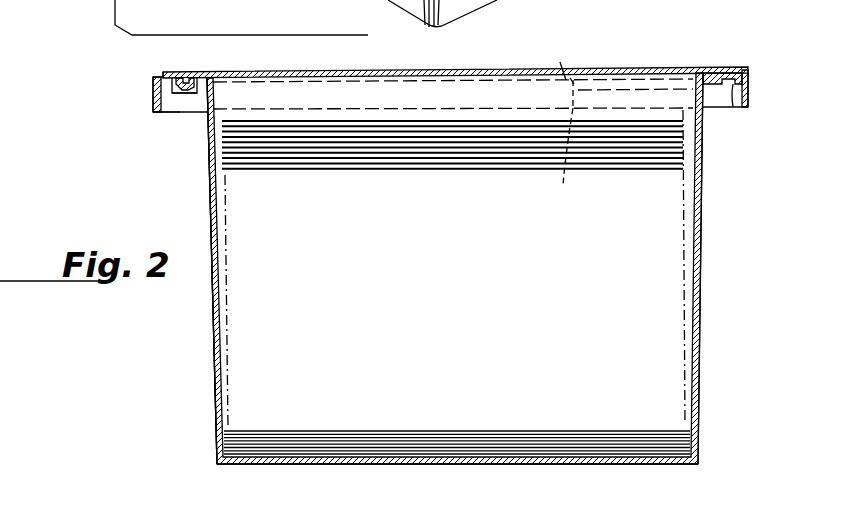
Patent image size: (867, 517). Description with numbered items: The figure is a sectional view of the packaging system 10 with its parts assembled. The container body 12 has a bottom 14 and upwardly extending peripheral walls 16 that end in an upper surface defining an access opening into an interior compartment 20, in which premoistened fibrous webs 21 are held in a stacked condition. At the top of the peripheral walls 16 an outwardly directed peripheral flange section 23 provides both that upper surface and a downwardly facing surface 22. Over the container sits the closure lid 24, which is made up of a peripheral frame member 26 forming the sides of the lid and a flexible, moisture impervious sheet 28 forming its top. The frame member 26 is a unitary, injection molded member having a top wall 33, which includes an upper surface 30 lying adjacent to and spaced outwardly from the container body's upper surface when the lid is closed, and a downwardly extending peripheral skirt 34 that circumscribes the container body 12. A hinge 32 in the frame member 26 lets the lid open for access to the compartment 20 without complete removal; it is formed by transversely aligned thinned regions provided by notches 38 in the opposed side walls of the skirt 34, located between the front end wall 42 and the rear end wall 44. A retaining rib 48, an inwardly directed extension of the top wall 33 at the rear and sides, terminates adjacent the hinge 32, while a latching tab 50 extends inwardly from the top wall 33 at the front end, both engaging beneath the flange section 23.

The packaging system 10 is at (190, 209).
The container body 12 is at (703, 312).
The bottom 14 is at (670, 466).
The peripheral walls 16 is at (213, 334).
The interior compartment 20 is at (222, 258).
The premoistened fibrous webs 21 is at (668, 152).
The downwardly facing surface 22 is at (198, 88).
The peripheral flange section 23 is at (188, 80).
The closure lid 24 is at (152, 97).
The peripheral frame member 26 is at (153, 108).
The moisture impervious sheet 28 is at (637, 70).
The upper surface 30 is at (747, 70).
The hinge 32 is at (558, 66).
The top wall 33 is at (165, 79).
The peripheral skirt 34 is at (153, 88).
The notches 38 is at (581, 157).
The front end wall 42 is at (157, 111).
The rear end wall 44 is at (750, 83).
The retaining rib 48 is at (733, 90).
The latching tab 50 is at (186, 80).